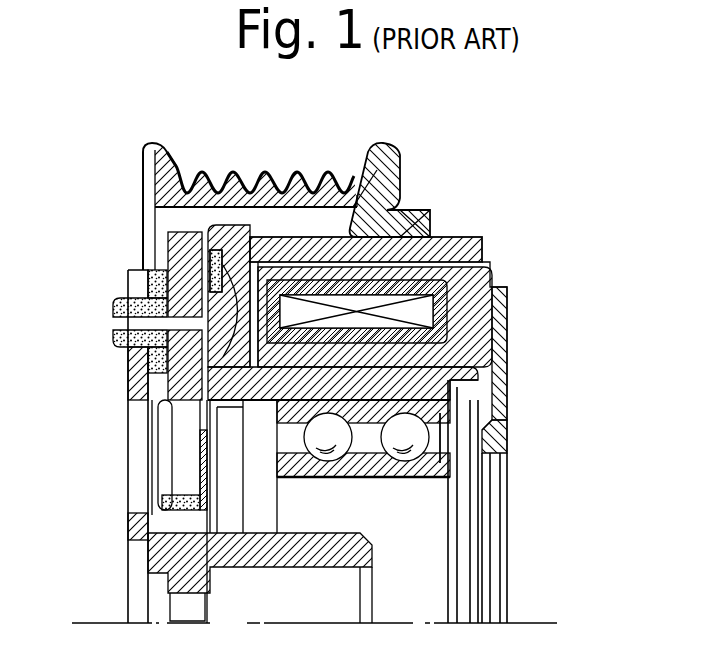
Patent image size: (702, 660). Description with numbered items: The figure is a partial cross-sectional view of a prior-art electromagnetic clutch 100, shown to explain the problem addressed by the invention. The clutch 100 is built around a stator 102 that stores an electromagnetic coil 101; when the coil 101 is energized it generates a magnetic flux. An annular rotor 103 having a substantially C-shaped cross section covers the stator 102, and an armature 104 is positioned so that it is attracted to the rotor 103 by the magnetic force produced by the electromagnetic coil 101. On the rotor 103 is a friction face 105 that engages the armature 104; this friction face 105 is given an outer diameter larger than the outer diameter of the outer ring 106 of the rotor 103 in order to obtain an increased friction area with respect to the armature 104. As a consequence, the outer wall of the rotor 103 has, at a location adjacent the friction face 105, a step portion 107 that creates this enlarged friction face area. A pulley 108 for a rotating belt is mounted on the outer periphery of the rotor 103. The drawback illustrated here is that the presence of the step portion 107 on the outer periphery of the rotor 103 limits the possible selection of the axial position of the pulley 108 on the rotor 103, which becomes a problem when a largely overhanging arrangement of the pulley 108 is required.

The electromagnetic clutch 100 is at (123, 154).
The electromagnetic coil 101 is at (423, 296).
The stator 102 is at (490, 267).
The rotor 103 is at (299, 228).
The armature 104 is at (188, 300).
The friction face 105 is at (165, 284).
The outer ring 106 is at (418, 214).
The step portion 107 is at (256, 174).
The pulley 108 is at (351, 193).